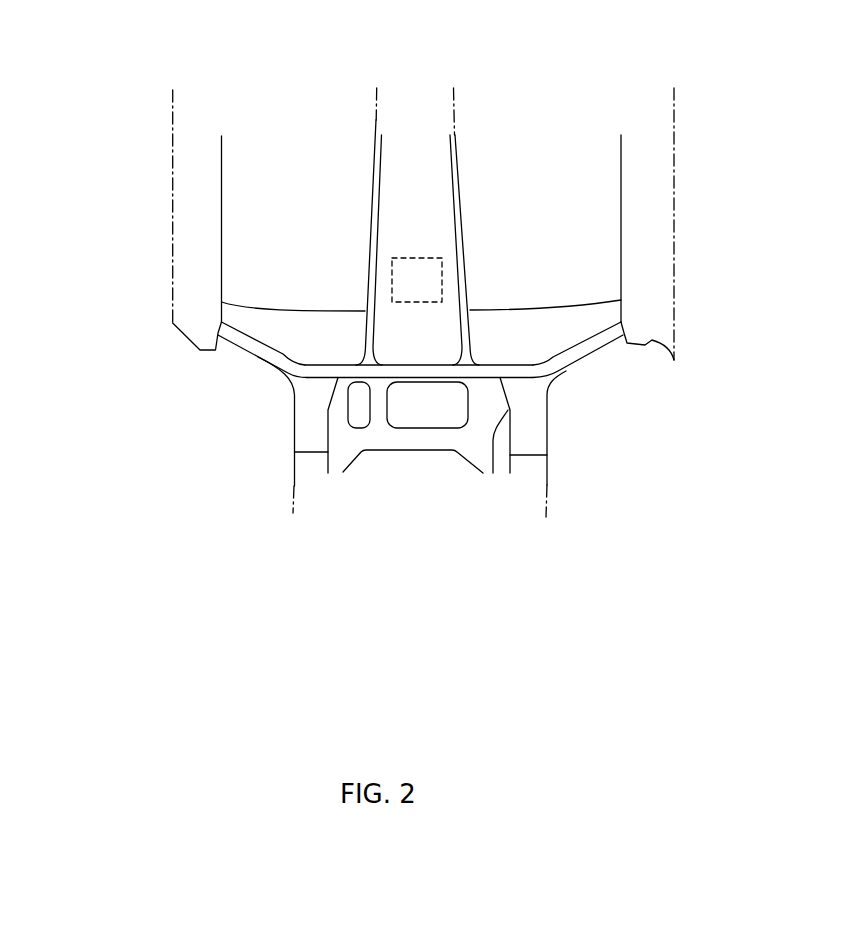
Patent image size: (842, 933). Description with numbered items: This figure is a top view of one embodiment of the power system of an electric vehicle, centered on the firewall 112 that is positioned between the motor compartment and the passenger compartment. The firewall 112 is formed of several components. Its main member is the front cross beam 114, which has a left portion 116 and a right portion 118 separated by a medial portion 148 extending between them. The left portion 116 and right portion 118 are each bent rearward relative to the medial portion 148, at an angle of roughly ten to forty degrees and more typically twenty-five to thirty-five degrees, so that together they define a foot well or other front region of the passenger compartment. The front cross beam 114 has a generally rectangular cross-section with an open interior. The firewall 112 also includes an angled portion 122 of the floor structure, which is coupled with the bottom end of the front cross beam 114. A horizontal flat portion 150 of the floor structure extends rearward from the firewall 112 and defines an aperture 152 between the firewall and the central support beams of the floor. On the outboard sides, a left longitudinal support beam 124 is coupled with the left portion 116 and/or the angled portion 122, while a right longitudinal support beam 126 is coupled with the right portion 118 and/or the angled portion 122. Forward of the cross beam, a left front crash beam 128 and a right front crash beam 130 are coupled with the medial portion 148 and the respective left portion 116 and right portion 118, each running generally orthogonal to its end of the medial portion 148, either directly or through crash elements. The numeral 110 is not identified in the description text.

The central spar / fin 110 is at (435, 187).
The firewall 112 is at (219, 320).
The front cross beam 114 is at (493, 357).
The left portion 116 is at (588, 350).
The right portion 118 is at (250, 343).
The angled portion 122 is at (305, 335).
The left longitudinal support beam 124 is at (660, 152).
The right longitudinal support beam 126 is at (178, 212).
The left front crash beam 128 is at (318, 475).
The right front crash beam 130 is at (521, 468).
The medial portion 148 is at (407, 366).
The horizontal flat portion 150 is at (287, 132).
The aperture 152 is at (395, 265).